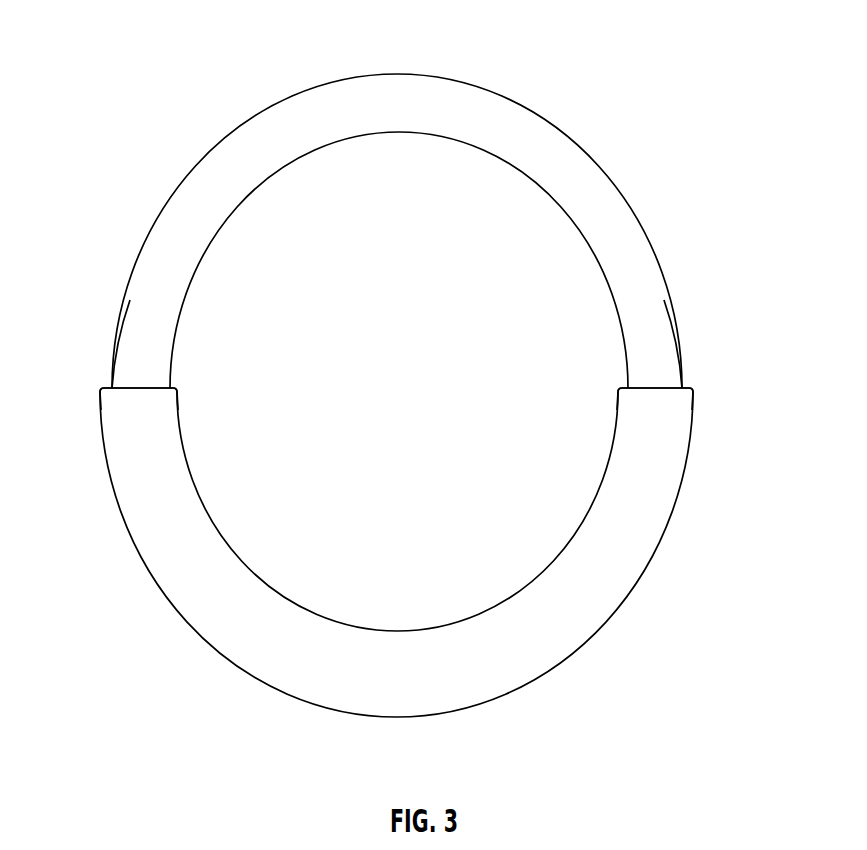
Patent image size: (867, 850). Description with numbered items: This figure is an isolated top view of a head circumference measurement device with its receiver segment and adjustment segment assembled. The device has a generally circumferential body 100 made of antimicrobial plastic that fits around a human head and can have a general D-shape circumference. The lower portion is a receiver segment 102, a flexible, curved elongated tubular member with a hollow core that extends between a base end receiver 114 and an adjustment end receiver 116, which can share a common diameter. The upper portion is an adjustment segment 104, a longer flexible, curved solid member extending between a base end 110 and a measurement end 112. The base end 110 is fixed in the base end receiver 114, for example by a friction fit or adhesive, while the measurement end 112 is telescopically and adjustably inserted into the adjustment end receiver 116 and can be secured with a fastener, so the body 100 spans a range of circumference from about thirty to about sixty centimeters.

The generally circumferential body 100 is at (172, 72).
The receiver segment 102 is at (153, 488).
The adjustment segment 104 is at (598, 193).
The base end 110 is at (130, 371).
The measurement end 112 is at (655, 370).
The base end receiver 114 is at (130, 413).
The adjustment end receiver 116 is at (657, 413).